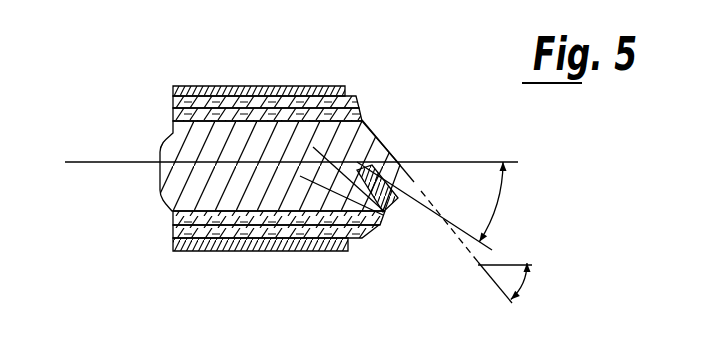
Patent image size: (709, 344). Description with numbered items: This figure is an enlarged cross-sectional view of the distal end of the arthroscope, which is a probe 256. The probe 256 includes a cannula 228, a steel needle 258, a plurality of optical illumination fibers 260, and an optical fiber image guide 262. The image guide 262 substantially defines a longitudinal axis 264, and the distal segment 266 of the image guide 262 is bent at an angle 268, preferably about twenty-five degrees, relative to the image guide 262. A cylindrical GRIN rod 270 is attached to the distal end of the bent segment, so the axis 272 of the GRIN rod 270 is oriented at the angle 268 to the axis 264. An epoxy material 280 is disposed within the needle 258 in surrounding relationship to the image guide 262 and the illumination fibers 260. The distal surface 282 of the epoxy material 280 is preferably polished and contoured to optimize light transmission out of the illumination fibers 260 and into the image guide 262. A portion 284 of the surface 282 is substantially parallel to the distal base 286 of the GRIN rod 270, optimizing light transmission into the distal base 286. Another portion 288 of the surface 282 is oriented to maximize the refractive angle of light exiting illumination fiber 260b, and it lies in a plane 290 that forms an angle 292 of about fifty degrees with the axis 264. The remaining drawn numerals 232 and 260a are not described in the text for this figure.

The probe 256 is at (107, 72).
The optical illumination fibers 260 is at (210, 122).
The cannula 228 is at (251, 103).
The outer jacket 232 is at (350, 100).
The steel needle 258 is at (360, 101).
The illumination fiber 260b is at (371, 120).
The lower end portion of core 260a is at (357, 226).
The portion of distal surface 288 is at (385, 160).
The distal segment of image guide 266 is at (372, 161).
The distal surface of epoxy material 282 is at (410, 178).
The portion of distal surface 284 is at (411, 182).
The longitudinal axis 264 is at (516, 162).
The angle 268 is at (500, 189).
The axis of GRIN rod 272 is at (488, 245).
The plane 290 is at (481, 262).
The angle 292 is at (523, 288).
The distal base of GRIN rod 286 is at (398, 205).
The GRIN rod 270 is at (394, 207).
The epoxy material 280 is at (240, 165).
The optical fiber image guide 262 is at (217, 173).